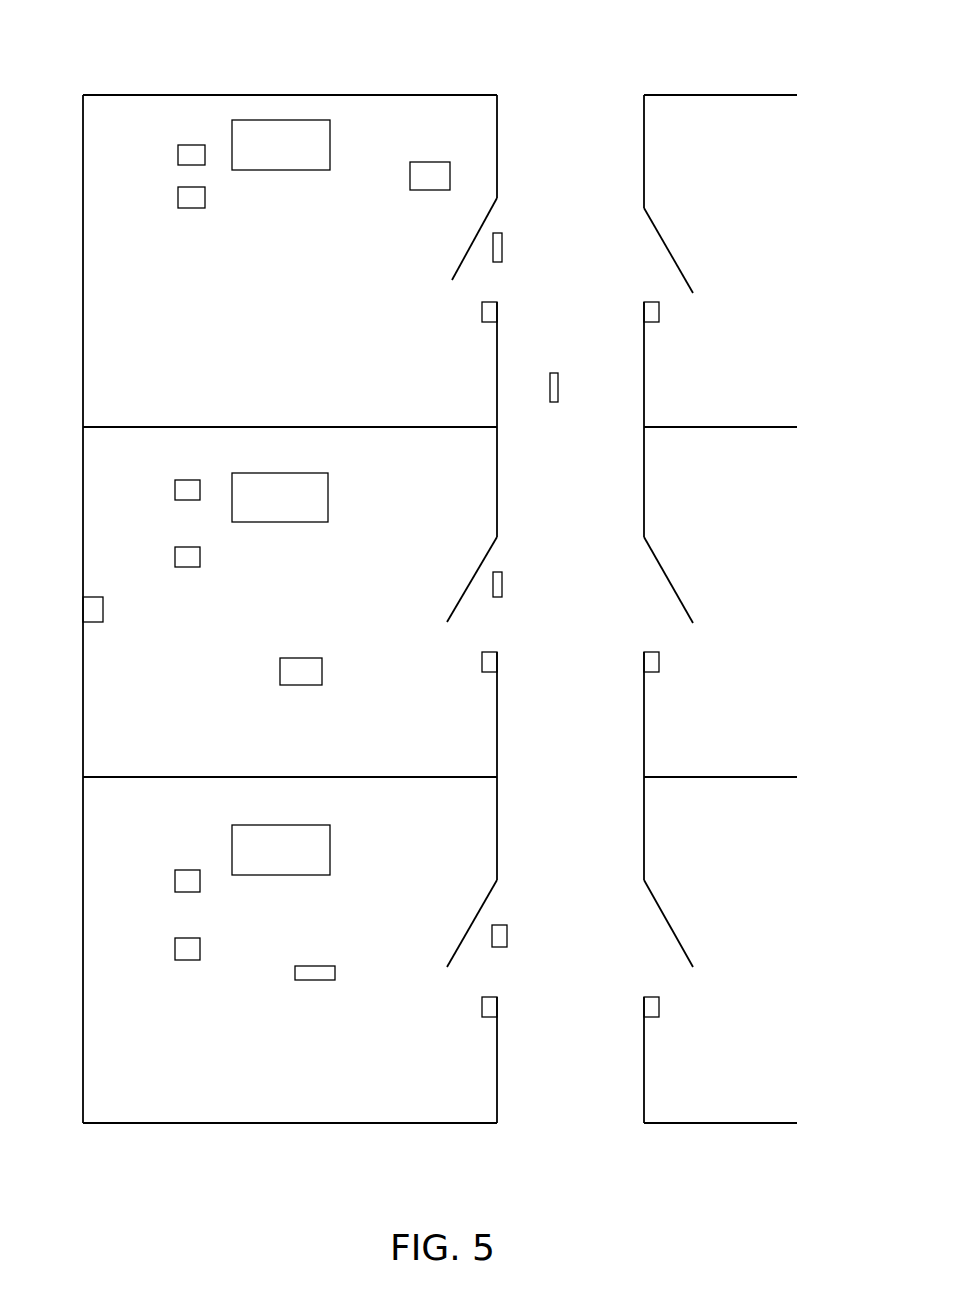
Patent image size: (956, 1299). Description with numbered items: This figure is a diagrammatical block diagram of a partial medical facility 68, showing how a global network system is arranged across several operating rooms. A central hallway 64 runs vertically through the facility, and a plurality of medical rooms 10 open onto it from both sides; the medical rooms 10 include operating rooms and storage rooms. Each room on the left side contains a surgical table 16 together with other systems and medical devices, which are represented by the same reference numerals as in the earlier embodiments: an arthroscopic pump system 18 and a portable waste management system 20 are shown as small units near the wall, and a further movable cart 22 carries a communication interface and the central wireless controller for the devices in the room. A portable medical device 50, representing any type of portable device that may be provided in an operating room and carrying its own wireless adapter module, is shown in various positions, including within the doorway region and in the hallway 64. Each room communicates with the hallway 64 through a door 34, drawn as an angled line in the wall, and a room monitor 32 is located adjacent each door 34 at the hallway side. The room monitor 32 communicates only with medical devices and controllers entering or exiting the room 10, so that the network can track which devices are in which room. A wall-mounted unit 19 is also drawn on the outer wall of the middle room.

The operating room 10 is at (226, 294).
The surgical table 16 is at (330, 143).
The arthroscopic pump system 18 is at (178, 152).
The wall-mounted device 19 is at (103, 608).
The portable waste management system 20 is at (178, 197).
The movable cart 22 is at (428, 162).
The room monitor 32 is at (482, 312).
The door 34 is at (462, 262).
The portable medical device 50 is at (503, 247).
The hallway 64 is at (584, 715).
The medical facility 68 is at (370, 60).